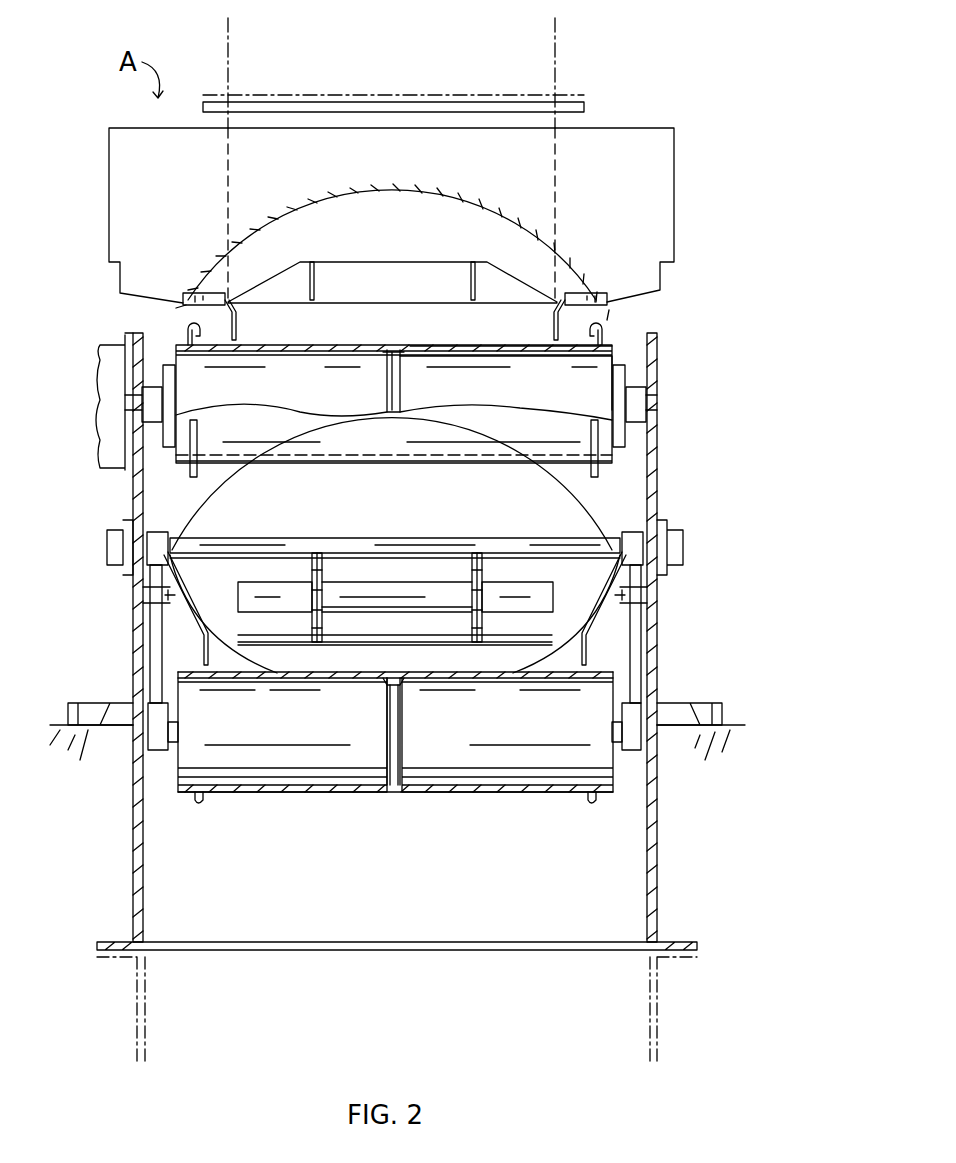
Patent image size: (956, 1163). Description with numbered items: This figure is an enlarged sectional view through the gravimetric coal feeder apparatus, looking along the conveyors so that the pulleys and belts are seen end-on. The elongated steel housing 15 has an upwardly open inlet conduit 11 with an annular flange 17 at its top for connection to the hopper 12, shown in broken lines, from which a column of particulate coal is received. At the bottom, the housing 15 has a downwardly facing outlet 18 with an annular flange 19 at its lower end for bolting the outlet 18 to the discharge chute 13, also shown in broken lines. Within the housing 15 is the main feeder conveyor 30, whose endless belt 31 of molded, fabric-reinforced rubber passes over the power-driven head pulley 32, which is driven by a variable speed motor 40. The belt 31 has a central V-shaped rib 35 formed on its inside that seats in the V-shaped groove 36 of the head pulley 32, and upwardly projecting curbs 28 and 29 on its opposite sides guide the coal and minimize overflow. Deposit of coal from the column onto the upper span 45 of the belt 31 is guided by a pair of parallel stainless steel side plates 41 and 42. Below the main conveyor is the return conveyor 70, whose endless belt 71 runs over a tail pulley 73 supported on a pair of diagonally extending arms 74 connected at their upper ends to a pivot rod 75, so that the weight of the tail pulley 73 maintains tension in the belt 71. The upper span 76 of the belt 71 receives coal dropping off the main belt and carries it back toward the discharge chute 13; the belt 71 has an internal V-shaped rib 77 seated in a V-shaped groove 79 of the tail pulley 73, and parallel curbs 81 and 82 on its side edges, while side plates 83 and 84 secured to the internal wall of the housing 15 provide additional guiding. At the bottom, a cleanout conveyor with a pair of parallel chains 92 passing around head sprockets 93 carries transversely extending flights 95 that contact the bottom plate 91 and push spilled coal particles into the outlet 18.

The inlet conduit 11 is at (548, 121).
The hopper 12 is at (556, 40).
The discharge chute 13 is at (137, 1008).
The housing 15 is at (577, 263).
The annular flange 17 is at (584, 108).
The outlet 18 is at (133, 880).
The annular flange 19 is at (113, 944).
The curb 28 is at (187, 328).
The curb 29 is at (603, 327).
The main feeder conveyor 30 is at (376, 323).
The endless belt 31 is at (339, 443).
The head pulley 32 is at (305, 365).
The V-shaped rib 35 is at (402, 356).
The V-shaped groove 36 is at (388, 396).
The variable speed motor 40 is at (110, 455).
The side plate 41 is at (238, 332).
The side plate 42 is at (552, 340).
The upper span 45 is at (462, 345).
The return conveyor 70 is at (422, 808).
The endless belt 71 is at (448, 790).
The tail pulley 73 is at (298, 767).
The diagonally extending arms 74 is at (157, 645).
The pivot rod 75 is at (548, 545).
The upper span 76 is at (362, 675).
The V-shaped rib 77 is at (403, 680).
The V-shaped groove 79 is at (398, 750).
The curb 81 is at (200, 802).
The curb 82 is at (593, 802).
The side plate 83 is at (185, 588).
The side plate 84 is at (583, 612).
The bottom plate 91 is at (432, 640).
The chains 92 is at (315, 575).
The head sprockets 93 is at (318, 595).
The flights 95 is at (400, 642).